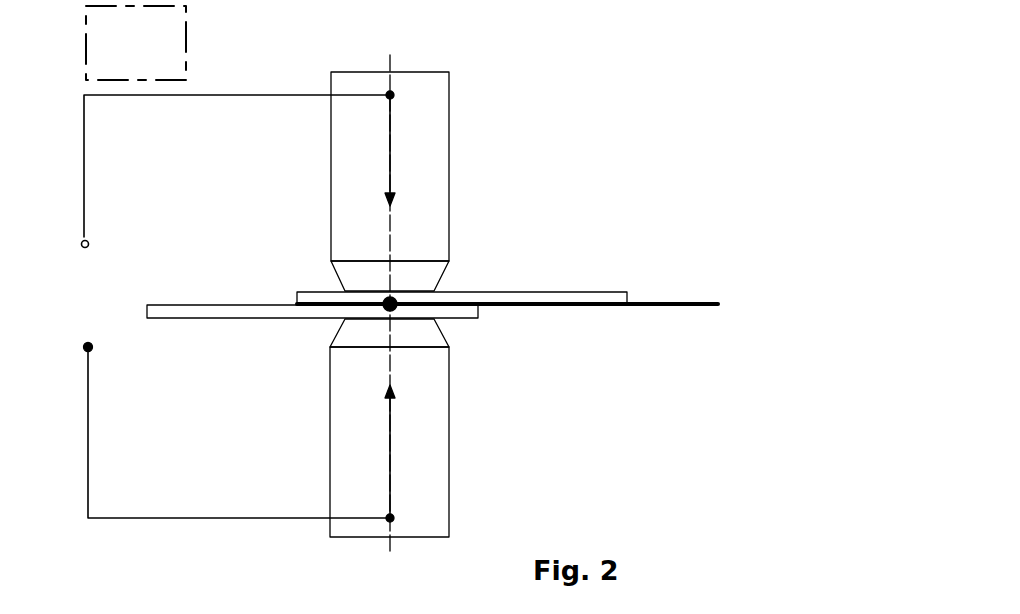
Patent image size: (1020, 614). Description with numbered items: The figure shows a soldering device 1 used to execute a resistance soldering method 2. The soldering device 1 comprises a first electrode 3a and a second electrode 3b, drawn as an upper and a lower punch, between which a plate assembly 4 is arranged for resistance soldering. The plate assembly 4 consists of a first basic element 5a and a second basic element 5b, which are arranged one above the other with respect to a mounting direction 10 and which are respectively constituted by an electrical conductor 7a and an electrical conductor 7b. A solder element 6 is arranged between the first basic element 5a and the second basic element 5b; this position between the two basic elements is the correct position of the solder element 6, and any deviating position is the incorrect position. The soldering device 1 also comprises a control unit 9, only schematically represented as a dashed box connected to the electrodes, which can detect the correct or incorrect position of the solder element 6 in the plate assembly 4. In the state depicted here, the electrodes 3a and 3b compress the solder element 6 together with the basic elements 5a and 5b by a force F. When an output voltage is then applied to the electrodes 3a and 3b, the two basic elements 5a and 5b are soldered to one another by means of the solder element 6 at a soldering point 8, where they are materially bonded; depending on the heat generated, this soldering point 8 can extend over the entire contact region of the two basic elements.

The soldering device 1 is at (472, 93).
The resistance soldering method 2 is at (656, 56).
The first electrode 3a is at (344, 199).
The second electrode 3b is at (354, 428).
The plate assembly 4 is at (690, 240).
The first basic element 5a is at (478, 257).
The electrical conductor 7a is at (538, 297).
The second basic element 5b is at (370, 364).
The electrical conductor 7b is at (459, 312).
The solder element 6 is at (298, 292).
The soldering point 8 is at (370, 319).
The control unit 9 is at (141, 56).
The mounting direction 10 is at (390, 236).